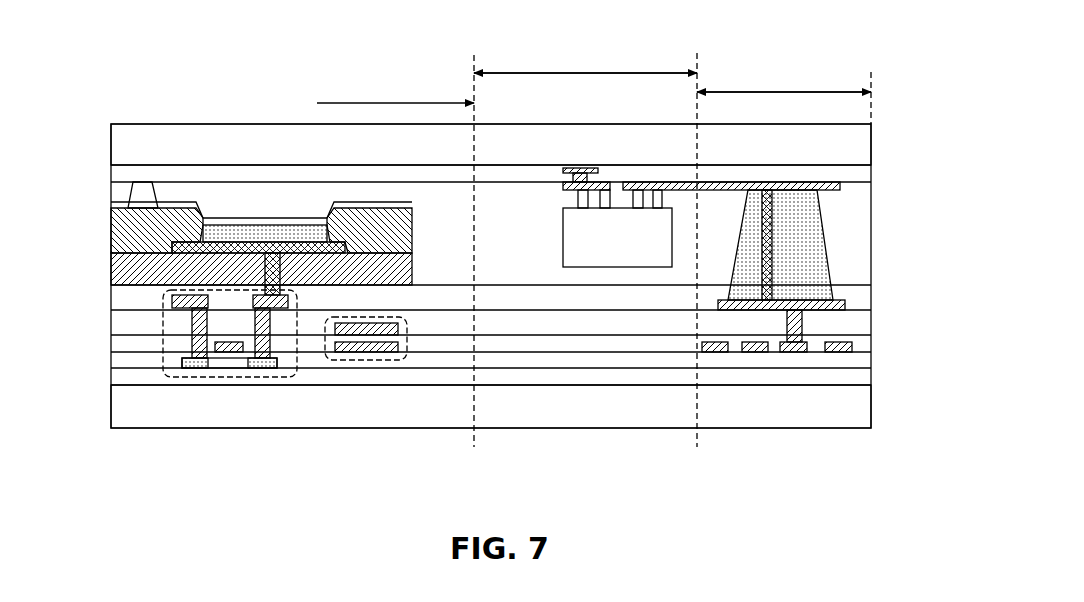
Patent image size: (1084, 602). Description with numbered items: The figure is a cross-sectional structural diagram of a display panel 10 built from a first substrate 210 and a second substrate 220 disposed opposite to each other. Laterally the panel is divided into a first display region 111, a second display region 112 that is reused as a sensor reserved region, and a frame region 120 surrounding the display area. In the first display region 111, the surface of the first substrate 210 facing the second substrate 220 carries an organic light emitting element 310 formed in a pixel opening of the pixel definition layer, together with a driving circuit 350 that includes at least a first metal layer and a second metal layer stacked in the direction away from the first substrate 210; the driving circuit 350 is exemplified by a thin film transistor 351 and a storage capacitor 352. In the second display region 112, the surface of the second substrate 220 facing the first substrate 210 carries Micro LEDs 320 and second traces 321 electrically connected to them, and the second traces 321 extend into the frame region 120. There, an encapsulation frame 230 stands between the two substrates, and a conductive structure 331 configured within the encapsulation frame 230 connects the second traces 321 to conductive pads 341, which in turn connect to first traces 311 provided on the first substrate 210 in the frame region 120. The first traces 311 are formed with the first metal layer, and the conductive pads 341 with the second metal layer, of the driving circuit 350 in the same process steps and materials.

The display panel 10 is at (146, 110).
The first display region 111 is at (395, 92).
The second display region 112 is at (585, 73).
The frame region 120 is at (784, 92).
The first substrate 210 is at (110, 410).
The second substrate 220 is at (110, 148).
The encapsulation frame 230 is at (817, 215).
The organic light emitting element 310 is at (245, 220).
The first traces 311 is at (852, 348).
The Micro LEDs 320 is at (620, 208).
The second traces 321 is at (840, 188).
The conductive structure 331 is at (773, 257).
The conductive pads 341 is at (845, 305).
The driving circuit 350 is at (285, 395).
The thin film transistor 351 is at (212, 377).
The storage capacitor 352 is at (366, 390).